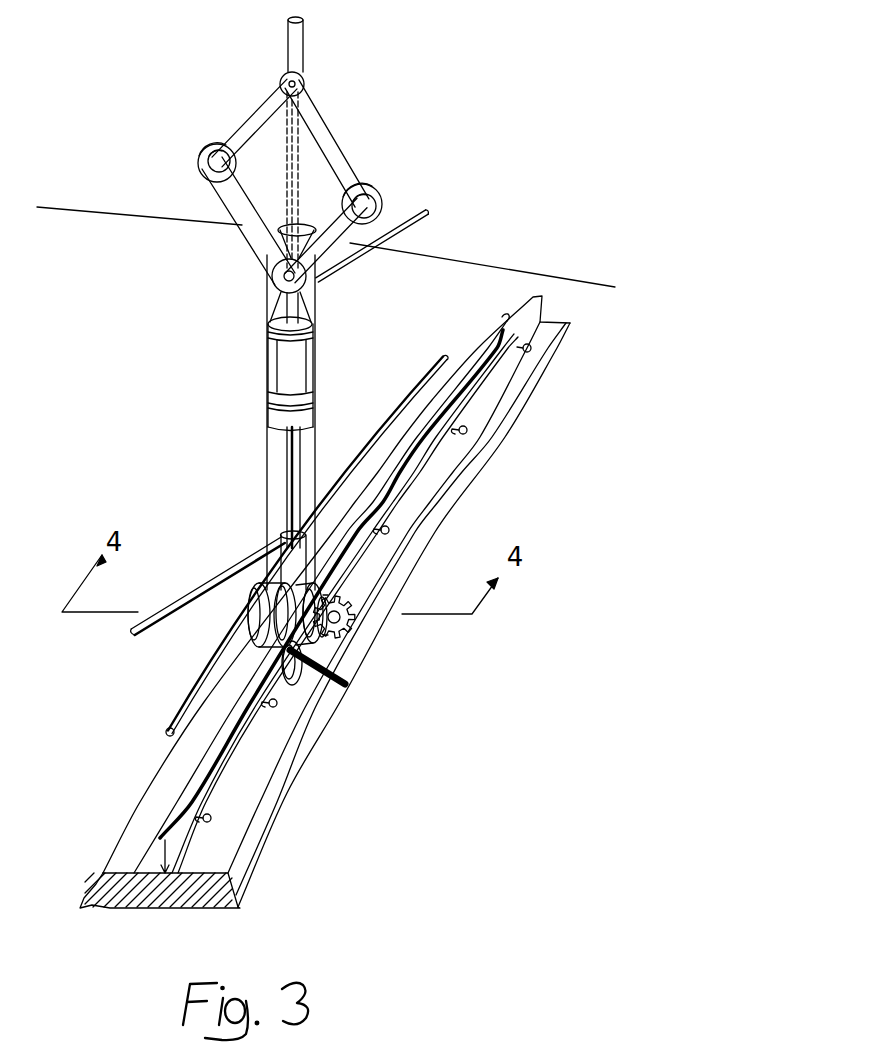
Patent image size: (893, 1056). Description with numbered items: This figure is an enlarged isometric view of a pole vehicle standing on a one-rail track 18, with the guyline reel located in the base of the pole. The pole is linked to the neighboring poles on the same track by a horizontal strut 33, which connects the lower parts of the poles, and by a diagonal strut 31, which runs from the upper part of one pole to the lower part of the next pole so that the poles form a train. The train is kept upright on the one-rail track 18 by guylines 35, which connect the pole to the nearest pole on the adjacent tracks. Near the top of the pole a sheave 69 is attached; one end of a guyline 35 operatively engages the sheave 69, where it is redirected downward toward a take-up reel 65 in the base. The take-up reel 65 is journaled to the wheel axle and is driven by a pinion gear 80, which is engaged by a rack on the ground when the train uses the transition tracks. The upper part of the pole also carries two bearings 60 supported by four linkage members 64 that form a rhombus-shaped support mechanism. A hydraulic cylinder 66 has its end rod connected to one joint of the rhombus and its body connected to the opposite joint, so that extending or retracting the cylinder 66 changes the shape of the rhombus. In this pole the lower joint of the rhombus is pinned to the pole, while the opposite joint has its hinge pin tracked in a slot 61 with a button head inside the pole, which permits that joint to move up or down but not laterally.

The track 18 is at (290, 798).
The diagonal strut 31 is at (202, 590).
The horizontal strut 33 is at (183, 710).
The guyline 35 is at (160, 220).
The bearing 60 is at (377, 193).
The slot 61 is at (272, 170).
The linkage member 64 is at (317, 123).
The take-up reel 65 is at (292, 640).
The hydraulic cylinder 66 is at (288, 378).
The sheave 69 is at (347, 173).
The pinion gear 80 is at (352, 620).